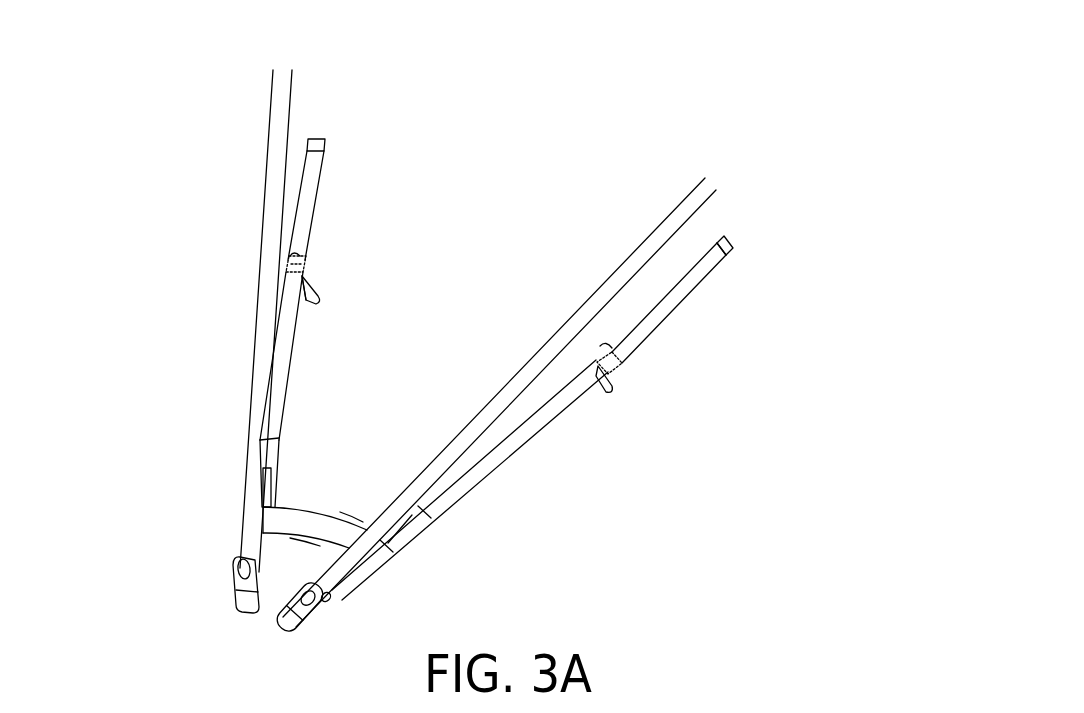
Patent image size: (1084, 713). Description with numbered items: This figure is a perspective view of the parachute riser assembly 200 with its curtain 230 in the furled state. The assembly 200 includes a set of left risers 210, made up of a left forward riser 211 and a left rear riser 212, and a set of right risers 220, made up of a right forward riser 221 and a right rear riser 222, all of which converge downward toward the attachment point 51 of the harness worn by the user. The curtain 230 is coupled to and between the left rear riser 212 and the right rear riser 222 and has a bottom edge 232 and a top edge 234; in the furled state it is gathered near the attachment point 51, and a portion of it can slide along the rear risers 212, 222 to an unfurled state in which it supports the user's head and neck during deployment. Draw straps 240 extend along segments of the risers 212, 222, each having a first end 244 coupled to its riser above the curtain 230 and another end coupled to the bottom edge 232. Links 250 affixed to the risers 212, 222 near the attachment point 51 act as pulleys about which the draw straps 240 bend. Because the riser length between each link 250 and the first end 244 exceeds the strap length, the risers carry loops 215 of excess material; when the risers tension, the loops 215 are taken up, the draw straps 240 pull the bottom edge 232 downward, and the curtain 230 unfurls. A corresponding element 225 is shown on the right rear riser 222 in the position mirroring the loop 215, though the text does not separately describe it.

The parachute riser assembly 200 is at (806, 90).
The left risers 210 is at (612, 510).
The left forward riser 211 is at (462, 432).
The left rear riser 212 is at (498, 448).
The loops of excess material 215 is at (600, 392).
The right risers 220 is at (200, 370).
The right forward riser 221 is at (266, 277).
The right rear riser 222 is at (290, 358).
The second flag/tab 225 is at (318, 300).
The curtain 230 is at (310, 512).
The bottom edge 232 is at (306, 541).
The top edge 234 is at (347, 520).
The draw straps 240 is at (312, 272).
The first end 244 is at (305, 260).
The links 250 is at (328, 600).
The attachment point 51 is at (283, 623).